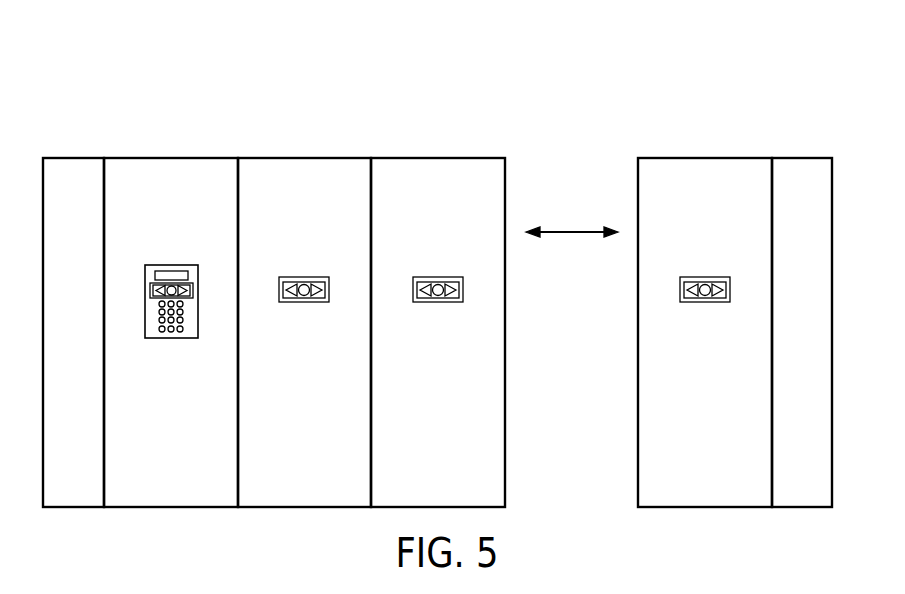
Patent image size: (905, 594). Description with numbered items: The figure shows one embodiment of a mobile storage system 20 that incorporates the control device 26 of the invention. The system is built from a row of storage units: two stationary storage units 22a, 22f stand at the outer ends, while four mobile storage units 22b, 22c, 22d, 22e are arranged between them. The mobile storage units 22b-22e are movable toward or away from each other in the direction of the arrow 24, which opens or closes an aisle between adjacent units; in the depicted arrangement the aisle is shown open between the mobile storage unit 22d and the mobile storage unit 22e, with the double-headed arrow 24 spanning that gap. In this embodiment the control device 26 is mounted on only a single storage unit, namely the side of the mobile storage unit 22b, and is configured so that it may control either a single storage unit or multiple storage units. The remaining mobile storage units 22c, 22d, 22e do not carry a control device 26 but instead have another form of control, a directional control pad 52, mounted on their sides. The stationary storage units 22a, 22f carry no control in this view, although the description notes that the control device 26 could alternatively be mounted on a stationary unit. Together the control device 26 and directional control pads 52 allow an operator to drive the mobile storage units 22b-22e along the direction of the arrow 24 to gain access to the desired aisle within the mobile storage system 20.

The mobile storage system 20 is at (437, 271).
The stationary storage unit 22a is at (78, 147).
The mobile storage unit 22b is at (170, 147).
The mobile storage unit 22c is at (296, 147).
The mobile storage unit 22d is at (437, 147).
The mobile storage unit 22e is at (705, 147).
The stationary storage unit 22f is at (802, 147).
The arrow 24 is at (571, 231).
The control device 26 is at (170, 338).
The directional control pad 52 is at (304, 302).